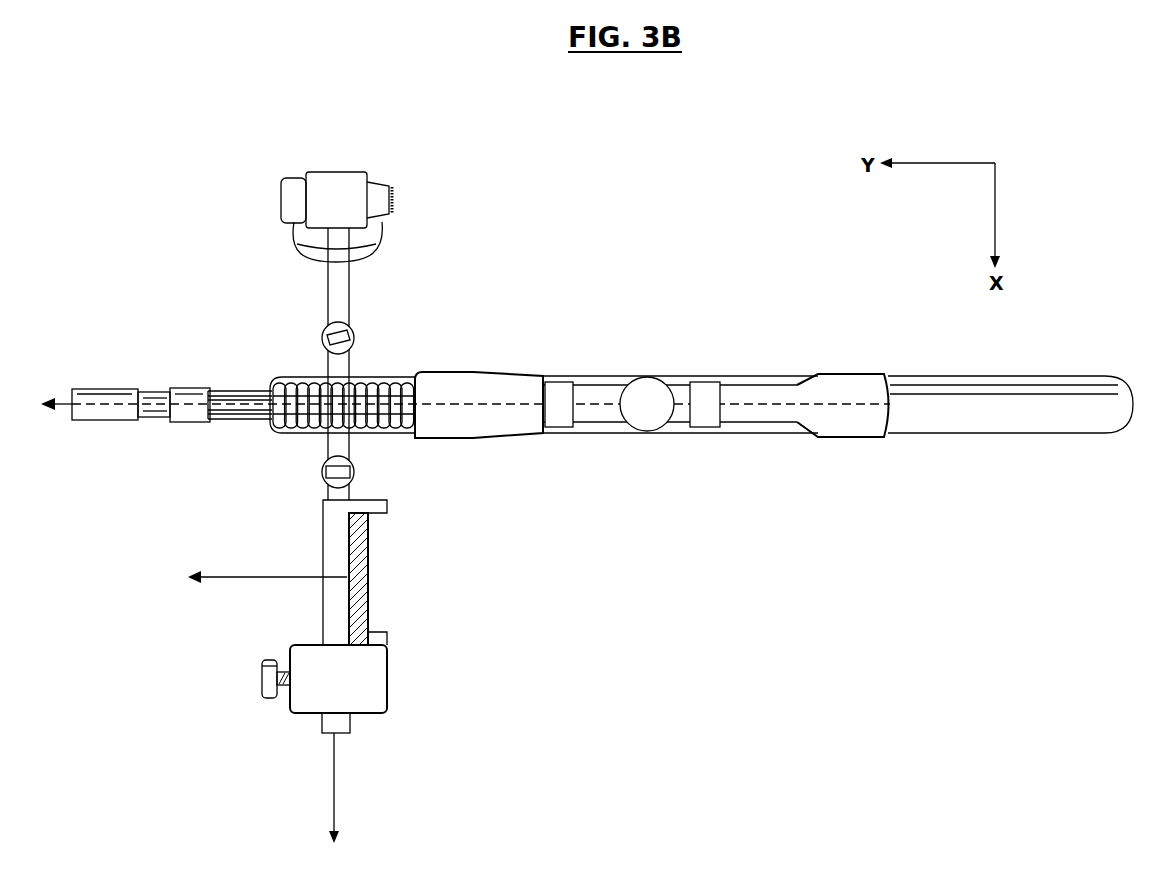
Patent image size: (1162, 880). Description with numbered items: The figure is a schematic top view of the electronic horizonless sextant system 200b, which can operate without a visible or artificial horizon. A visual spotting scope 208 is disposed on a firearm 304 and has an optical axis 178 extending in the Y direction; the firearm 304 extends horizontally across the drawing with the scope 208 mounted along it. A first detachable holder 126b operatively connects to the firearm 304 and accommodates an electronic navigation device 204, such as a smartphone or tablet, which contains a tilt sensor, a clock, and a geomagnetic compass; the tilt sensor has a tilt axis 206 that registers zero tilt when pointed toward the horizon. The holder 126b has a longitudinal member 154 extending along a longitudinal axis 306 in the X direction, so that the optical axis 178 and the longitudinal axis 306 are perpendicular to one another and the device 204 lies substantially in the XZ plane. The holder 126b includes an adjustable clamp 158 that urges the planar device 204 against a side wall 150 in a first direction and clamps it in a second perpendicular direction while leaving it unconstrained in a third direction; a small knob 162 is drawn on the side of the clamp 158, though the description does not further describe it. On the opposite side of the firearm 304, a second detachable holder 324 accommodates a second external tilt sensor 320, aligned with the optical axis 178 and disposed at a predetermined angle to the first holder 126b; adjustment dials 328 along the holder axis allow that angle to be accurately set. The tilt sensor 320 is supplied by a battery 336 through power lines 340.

The first detachable holder 126b is at (273, 756).
The side wall 150 is at (380, 515).
The longitudinal member 154 is at (330, 542).
The adjustable clamp 158 is at (353, 692).
The locking knob 162 is at (265, 690).
The optical axis 178 is at (118, 400).
The electronic horizonless sextant system 200b is at (654, 176).
The electronic navigation device 204 is at (371, 585).
The tilt axis 206 is at (275, 577).
The visual spotting scope 208 is at (834, 390).
The firearm 304 is at (998, 424).
The longitudinal axis 306 is at (337, 787).
The second external tilt sensor 320 is at (393, 197).
The second detachable holder 324 is at (327, 138).
The adjustment dials 328 is at (355, 334).
The battery 336 is at (297, 186).
The power lines 340 is at (298, 254).